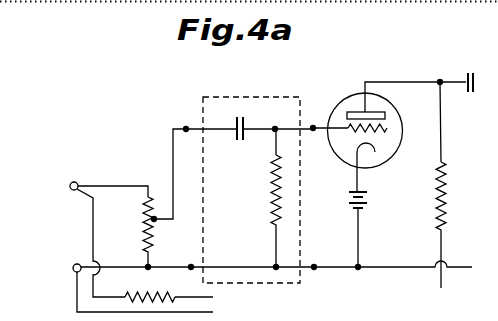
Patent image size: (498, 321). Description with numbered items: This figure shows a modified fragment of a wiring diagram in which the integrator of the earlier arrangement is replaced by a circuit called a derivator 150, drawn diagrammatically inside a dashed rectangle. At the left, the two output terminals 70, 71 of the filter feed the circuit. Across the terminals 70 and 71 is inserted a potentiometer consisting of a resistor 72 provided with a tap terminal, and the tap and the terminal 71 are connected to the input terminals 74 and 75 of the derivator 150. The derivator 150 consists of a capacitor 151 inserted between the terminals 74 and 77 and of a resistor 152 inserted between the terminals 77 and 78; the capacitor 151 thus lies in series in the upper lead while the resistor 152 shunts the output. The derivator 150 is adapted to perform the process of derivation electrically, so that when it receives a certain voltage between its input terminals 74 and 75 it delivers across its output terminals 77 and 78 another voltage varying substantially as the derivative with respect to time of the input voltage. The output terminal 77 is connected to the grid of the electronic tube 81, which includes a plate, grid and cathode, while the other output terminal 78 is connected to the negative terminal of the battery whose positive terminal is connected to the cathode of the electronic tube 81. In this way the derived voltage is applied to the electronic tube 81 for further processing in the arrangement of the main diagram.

The output terminal of the filter 70 is at (97, 181).
The output terminal of the filter 71 is at (62, 271).
The resistor 72 is at (148, 199).
The input terminal 74 is at (186, 129).
The input terminal 75 is at (182, 280).
The output terminal 77 is at (313, 128).
The output terminal 78 is at (319, 280).
The electronic tube 81 is at (352, 106).
The derivator 150 is at (277, 104).
The capacitor 151 is at (265, 141).
The resistor 152 is at (254, 198).